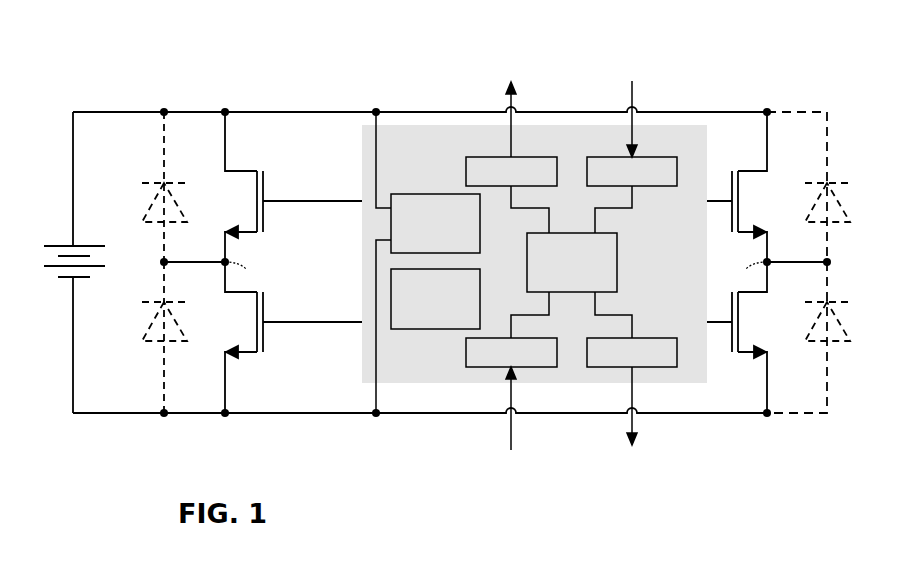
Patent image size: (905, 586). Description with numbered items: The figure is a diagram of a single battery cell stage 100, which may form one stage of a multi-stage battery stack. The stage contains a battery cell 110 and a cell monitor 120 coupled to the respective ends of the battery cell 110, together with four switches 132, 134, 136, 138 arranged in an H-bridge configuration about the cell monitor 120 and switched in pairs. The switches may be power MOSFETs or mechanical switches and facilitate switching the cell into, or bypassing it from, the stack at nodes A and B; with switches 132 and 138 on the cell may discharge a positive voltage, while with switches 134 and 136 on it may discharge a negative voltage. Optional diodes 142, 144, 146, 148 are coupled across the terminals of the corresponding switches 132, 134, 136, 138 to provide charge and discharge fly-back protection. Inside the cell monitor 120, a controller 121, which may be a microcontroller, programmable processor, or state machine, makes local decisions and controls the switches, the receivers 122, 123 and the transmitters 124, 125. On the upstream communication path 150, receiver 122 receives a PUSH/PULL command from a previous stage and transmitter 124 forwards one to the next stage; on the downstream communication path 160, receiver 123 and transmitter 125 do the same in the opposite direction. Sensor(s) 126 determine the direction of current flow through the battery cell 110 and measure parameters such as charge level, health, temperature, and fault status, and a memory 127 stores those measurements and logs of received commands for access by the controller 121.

The cell stage 100 is at (452, 335).
The battery cell 110 is at (73, 280).
The cell monitor 120 is at (534, 262).
The controller 121 is at (572, 262).
The receiver 122 is at (511, 352).
The receiver 123 is at (632, 171).
The transmitter 124 is at (511, 171).
The transmitter 125 is at (632, 352).
The sensor(s) 126 is at (435, 223).
The memory 127 is at (435, 299).
The switch 132 is at (290, 187).
The switch 134 is at (290, 337).
The switch 136 is at (742, 187).
The switch 138 is at (742, 337).
The diode 142 is at (157, 187).
The diode 144 is at (157, 337).
The diode 146 is at (837, 192).
The diode 148 is at (837, 312).
The upstream communication path 150 is at (500, 440).
The downstream communication path 160 is at (647, 427).